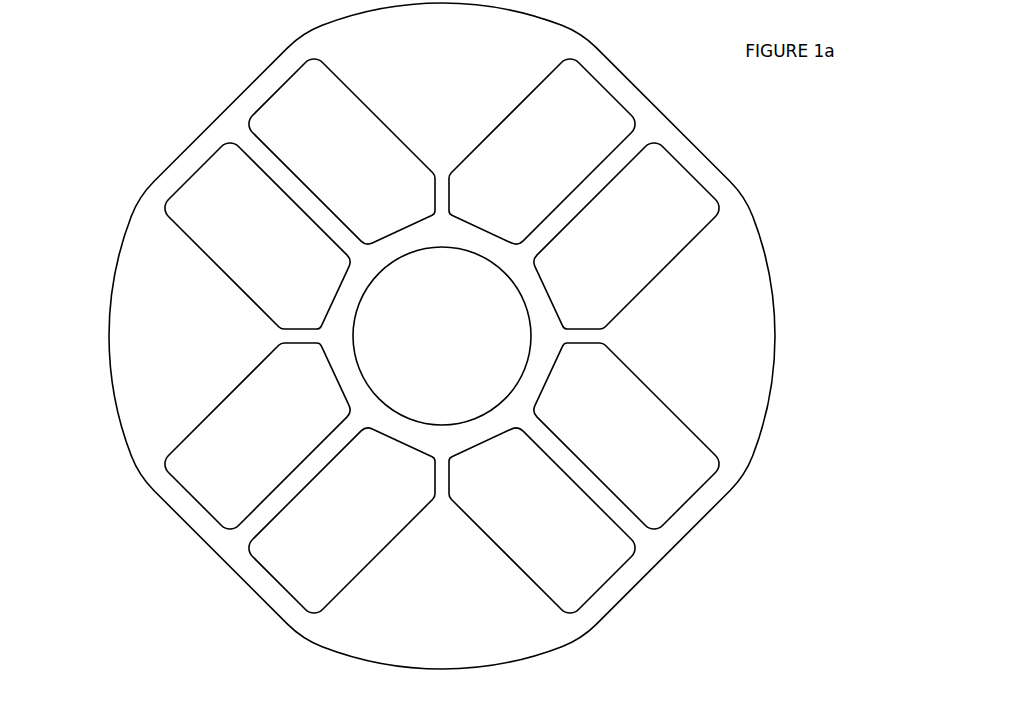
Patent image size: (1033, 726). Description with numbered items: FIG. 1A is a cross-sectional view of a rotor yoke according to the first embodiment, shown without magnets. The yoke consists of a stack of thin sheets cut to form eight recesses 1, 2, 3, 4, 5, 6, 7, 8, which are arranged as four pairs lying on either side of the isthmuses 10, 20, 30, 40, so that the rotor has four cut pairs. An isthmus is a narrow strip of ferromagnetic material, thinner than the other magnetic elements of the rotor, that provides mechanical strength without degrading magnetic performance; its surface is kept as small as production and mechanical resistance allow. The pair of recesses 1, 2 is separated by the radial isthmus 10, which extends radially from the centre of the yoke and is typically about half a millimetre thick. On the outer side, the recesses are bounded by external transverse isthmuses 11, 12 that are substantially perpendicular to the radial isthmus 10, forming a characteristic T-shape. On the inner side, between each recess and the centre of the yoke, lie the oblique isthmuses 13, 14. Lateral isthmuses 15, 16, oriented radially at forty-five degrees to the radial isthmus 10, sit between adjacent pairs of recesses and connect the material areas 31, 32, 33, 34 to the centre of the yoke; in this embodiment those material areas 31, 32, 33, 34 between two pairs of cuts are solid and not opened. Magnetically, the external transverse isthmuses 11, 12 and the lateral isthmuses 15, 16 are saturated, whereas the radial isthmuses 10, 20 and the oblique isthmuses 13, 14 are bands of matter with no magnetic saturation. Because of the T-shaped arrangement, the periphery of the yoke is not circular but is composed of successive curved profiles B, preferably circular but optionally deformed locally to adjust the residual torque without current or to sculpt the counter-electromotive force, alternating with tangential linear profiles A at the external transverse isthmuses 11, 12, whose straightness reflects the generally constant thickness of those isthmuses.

The recess 1 is at (258, 256).
The recess 2 is at (339, 171).
The recess 3 is at (522, 168).
The recess 4 is at (605, 253).
The recess 5 is at (605, 436).
The recess 6 is at (523, 527).
The recess 7 is at (340, 523).
The recess 8 is at (259, 439).
The radial isthmus 10 is at (442, 336).
The external transverse isthmus 11 is at (137, 137).
The external transverse isthmus 12 is at (197, 75).
The oblique isthmus 13 is at (343, 295).
The oblique isthmus 14 is at (403, 247).
The lateral isthmus 15 is at (163, 372).
The lateral isthmus 16 is at (640, 158).
The radial isthmus 20 is at (716, 212).
The isthmus 30 is at (728, 529).
The material area 31 is at (172, 313).
The material area 32 is at (315, 633).
The material area 33 is at (707, 330).
The material area 34 is at (570, 60).
The isthmus 40 is at (172, 510).
The tangential linear profile A is at (711, 602).
The curved profile B is at (821, 398).